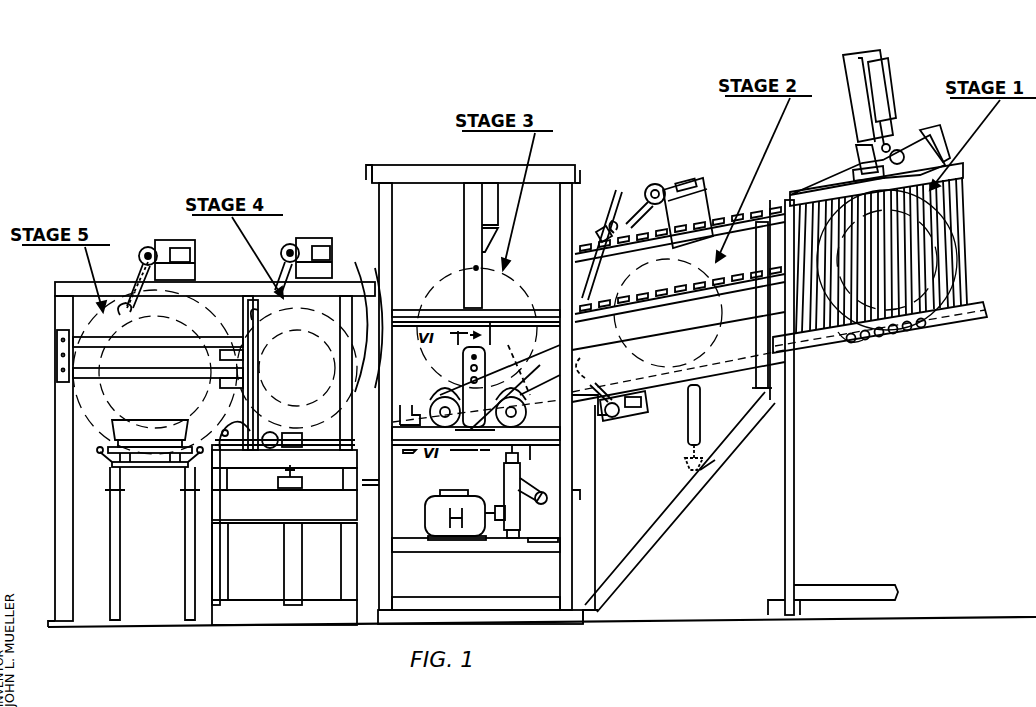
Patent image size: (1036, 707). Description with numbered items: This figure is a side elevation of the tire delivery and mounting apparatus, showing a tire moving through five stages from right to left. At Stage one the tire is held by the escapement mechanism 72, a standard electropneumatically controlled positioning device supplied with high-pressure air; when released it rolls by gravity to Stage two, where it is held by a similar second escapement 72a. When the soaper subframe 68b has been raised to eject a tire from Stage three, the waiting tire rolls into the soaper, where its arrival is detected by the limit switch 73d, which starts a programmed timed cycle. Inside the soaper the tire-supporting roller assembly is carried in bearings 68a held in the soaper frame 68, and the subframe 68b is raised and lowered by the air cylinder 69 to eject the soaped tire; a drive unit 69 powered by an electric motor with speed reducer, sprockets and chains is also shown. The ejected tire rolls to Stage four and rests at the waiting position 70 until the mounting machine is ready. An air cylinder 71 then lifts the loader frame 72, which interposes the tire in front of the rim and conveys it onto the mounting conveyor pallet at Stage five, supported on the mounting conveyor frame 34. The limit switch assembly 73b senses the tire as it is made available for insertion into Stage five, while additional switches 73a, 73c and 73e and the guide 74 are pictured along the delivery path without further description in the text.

The mounting conveyor frame 34 is at (183, 538).
The soaper frame 68 is at (485, 447).
The bearings 68a is at (560, 358).
The soaper subframe 68b is at (548, 452).
The air cylinder / drive unit 69 is at (570, 503).
The waiting position 70 is at (262, 612).
The air cylinder 71 is at (282, 561).
The escapement mechanism / loader frame 72 is at (335, 454).
The second escapement 72a is at (600, 255).
The sensor switch 73a is at (702, 163).
The limit switch assembly 73b is at (312, 223).
The sensor switch 73c is at (637, 418).
The limit switch 73d is at (480, 191).
The sensor switch 73e is at (165, 230).
The guide plate 74 is at (361, 261).